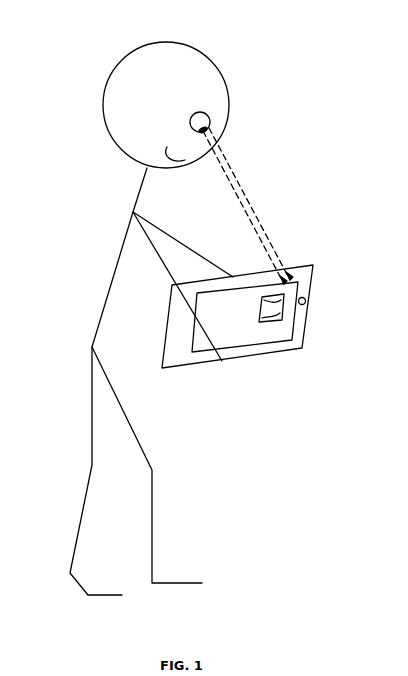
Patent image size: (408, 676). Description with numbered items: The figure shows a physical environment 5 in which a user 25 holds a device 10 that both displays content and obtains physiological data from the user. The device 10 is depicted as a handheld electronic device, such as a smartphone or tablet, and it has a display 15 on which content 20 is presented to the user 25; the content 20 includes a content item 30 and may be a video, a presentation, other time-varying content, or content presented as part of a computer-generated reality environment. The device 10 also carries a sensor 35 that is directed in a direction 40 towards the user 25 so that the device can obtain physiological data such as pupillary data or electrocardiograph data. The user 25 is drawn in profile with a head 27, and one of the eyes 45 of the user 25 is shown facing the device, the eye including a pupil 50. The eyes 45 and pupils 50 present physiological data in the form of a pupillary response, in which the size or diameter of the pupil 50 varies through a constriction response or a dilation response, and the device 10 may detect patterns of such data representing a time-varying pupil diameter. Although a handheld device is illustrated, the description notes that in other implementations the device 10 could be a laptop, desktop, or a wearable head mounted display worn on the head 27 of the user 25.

The physical environment 5 is at (54, 42).
The device 10 is at (278, 352).
The display 15 is at (245, 317).
The content 20 is at (261, 315).
The user 25 is at (118, 262).
The head 27 is at (157, 43).
The content item 30 is at (273, 309).
The sensor 35 is at (306, 300).
The direction 40 is at (264, 232).
The eyes 45 is at (194, 113).
The pupils 50 is at (212, 131).